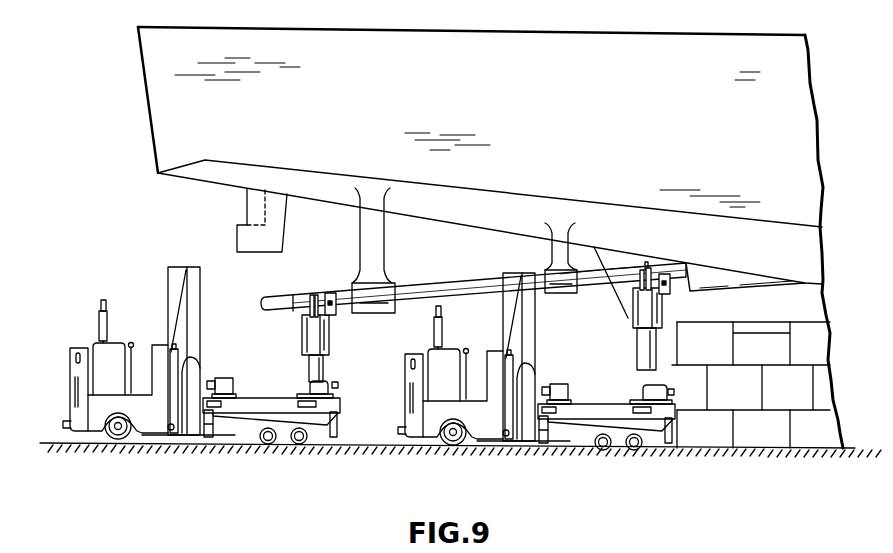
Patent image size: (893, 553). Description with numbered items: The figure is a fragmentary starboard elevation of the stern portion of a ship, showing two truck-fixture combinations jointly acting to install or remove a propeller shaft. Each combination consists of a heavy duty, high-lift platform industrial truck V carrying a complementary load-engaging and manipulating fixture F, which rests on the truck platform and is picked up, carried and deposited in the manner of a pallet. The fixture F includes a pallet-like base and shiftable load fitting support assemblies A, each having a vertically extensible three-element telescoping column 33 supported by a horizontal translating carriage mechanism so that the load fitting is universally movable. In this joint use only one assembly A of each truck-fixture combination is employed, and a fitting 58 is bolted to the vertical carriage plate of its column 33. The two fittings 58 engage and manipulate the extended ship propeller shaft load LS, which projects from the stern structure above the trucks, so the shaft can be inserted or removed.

The fitting 58 is at (318, 296).
The ship propeller shaft load LS is at (418, 284).
The load fitting support assembly A is at (464, 346).
The telescoping column 33 is at (301, 350).
The industrial truck V is at (188, 406).
The fixture F is at (291, 411).